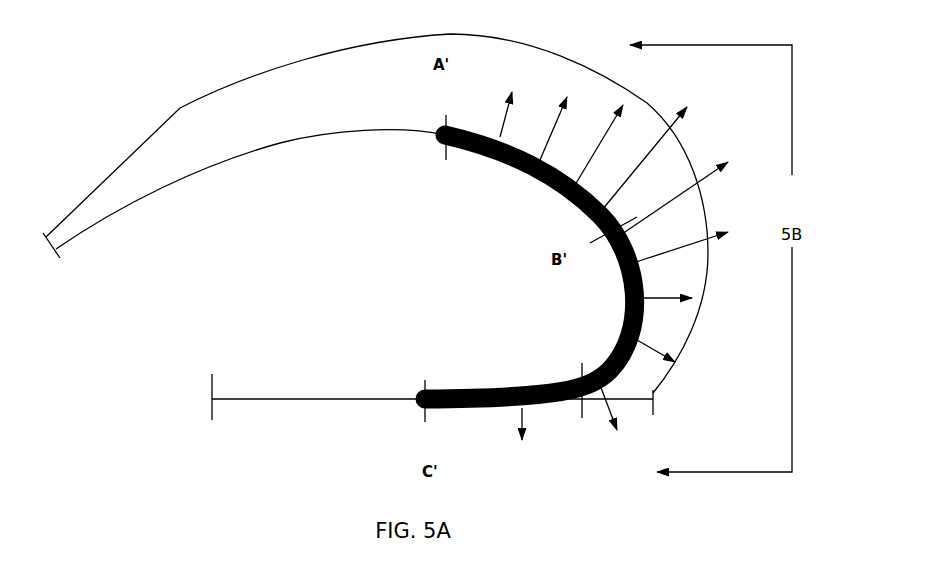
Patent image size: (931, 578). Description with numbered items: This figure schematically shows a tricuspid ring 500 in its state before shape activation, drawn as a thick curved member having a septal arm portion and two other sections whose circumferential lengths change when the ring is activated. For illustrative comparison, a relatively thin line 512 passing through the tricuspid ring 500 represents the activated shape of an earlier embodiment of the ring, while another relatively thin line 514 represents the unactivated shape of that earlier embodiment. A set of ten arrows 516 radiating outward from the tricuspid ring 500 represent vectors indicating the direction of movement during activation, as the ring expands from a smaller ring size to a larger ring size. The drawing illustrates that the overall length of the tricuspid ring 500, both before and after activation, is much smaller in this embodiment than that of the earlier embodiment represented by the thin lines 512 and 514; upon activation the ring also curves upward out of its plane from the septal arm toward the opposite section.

The tricuspid ring 500 is at (507, 165).
The relatively thin line 512 is at (258, 152).
The relatively thin line 514 is at (527, 47).
The arrows 516 is at (683, 106).